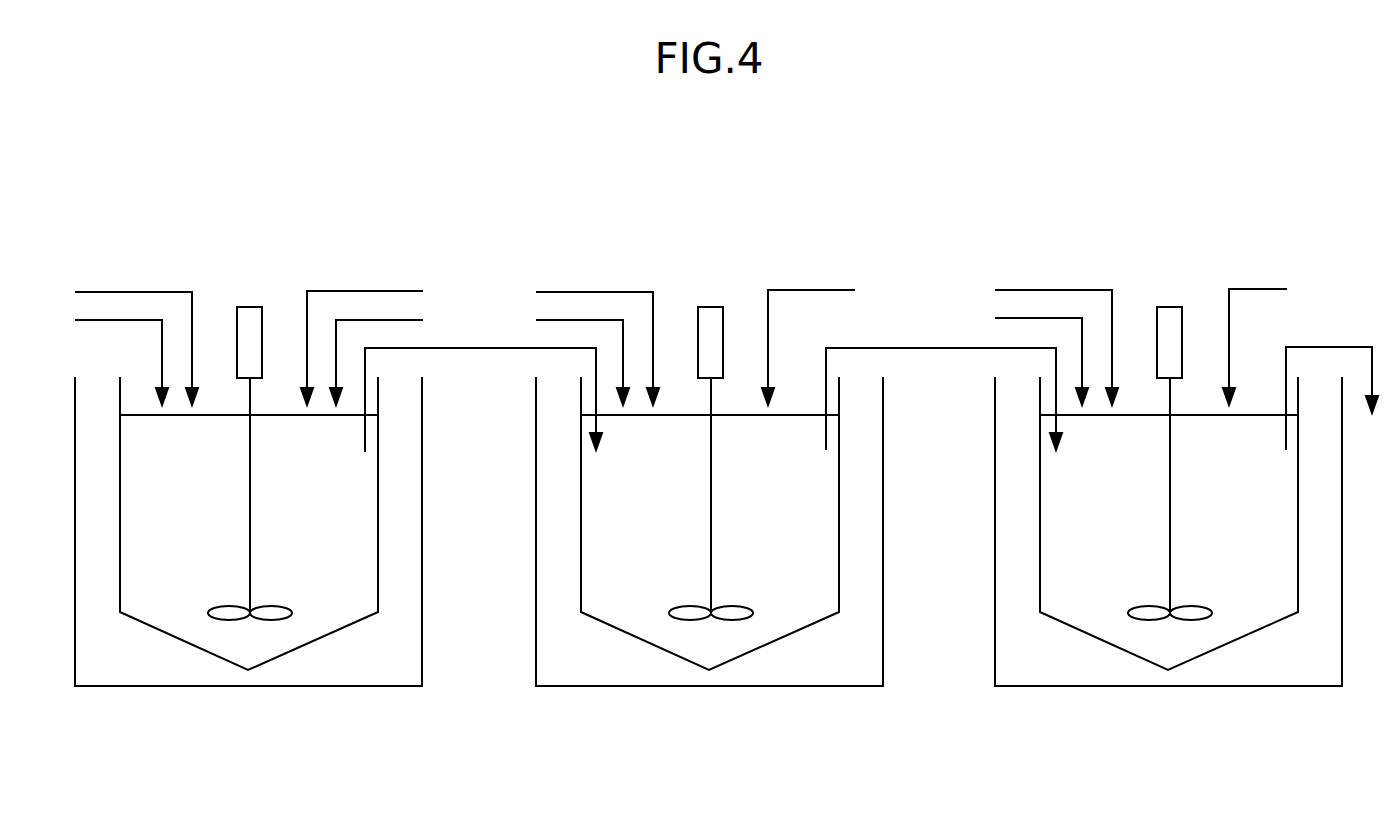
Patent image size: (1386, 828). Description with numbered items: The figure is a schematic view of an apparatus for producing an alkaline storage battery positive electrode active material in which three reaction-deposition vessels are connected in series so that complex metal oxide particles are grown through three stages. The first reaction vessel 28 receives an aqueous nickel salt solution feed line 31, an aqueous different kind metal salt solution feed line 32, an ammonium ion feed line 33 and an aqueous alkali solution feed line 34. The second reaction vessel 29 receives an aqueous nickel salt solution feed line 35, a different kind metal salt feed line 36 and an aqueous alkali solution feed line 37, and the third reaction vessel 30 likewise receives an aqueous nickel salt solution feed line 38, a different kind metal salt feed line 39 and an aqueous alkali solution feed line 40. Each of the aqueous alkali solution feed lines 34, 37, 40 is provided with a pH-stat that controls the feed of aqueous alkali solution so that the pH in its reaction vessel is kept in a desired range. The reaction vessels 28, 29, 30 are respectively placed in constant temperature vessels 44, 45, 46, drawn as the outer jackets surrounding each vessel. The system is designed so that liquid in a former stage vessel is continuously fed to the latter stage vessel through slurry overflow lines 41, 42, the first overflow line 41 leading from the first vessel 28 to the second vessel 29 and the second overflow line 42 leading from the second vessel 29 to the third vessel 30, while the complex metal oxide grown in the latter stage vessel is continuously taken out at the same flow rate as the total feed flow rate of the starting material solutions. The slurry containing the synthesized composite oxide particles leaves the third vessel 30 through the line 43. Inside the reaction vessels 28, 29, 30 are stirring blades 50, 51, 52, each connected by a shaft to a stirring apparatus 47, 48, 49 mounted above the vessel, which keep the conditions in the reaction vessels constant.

The reaction vessel 28 is at (173, 628).
The reaction vessel 29 is at (710, 556).
The reaction vessel 30 is at (1169, 556).
The aqueous nickel salt solution feed line 31 is at (163, 292).
The aqueous different kind metal salt solution feed line 32 is at (98, 320).
The ammonium ion feed line 33 is at (345, 291).
The aqueous alkali solution feed line 34 is at (390, 320).
The aqueous nickel salt solution feed line 35 is at (597, 316).
The different kind metal salt feed line 36 is at (582, 321).
The aqueous alkali solution feed line 37 is at (808, 315).
The aqueous nickel salt solution feed line 38 is at (1056, 315).
The different kind metal salt feed line 39 is at (1041, 321).
The aqueous alkali solution feed line 40 is at (1255, 314).
The slurry overflow line 41 is at (481, 348).
The slurry overflow line 42 is at (924, 348).
The line 43 is at (1346, 347).
The constant temperature vessel 44 is at (392, 662).
The constant temperature vessel 45 is at (709, 561).
The constant temperature vessel 46 is at (1168, 561).
The stirring apparatus 47 is at (252, 307).
The stirring apparatus 48 is at (711, 427).
The stirring apparatus 49 is at (1170, 427).
The stirring blade 50 is at (210, 605).
The stirring blade 51 is at (691, 579).
The stirring blade 52 is at (1150, 579).